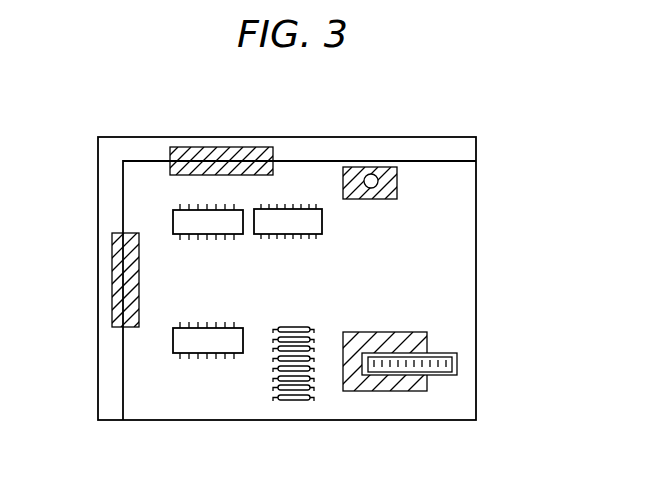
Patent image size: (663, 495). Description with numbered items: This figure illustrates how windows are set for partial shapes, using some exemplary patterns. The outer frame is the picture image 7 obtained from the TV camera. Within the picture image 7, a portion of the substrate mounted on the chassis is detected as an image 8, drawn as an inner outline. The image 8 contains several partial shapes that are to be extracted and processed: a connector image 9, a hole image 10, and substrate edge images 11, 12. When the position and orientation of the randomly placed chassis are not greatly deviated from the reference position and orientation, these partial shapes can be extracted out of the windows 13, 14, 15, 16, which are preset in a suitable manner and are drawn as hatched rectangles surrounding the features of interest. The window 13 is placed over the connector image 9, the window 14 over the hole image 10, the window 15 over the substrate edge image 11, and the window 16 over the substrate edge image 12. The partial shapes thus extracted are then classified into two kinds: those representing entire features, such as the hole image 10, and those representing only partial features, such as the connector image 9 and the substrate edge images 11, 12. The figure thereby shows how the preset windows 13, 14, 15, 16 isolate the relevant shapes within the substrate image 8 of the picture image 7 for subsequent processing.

The picture image 7 is at (477, 147).
The image 8 is at (458, 207).
The connector image 9 is at (446, 358).
The hole image 10 is at (376, 175).
The substrate edge image 11 is at (238, 170).
The substrate edge image 12 is at (122, 268).
The window 13 is at (407, 350).
The window 14 is at (372, 152).
The window 15 is at (222, 138).
The window 16 is at (129, 280).